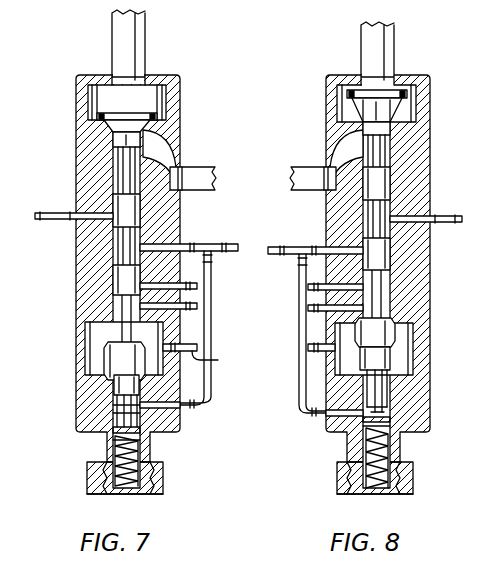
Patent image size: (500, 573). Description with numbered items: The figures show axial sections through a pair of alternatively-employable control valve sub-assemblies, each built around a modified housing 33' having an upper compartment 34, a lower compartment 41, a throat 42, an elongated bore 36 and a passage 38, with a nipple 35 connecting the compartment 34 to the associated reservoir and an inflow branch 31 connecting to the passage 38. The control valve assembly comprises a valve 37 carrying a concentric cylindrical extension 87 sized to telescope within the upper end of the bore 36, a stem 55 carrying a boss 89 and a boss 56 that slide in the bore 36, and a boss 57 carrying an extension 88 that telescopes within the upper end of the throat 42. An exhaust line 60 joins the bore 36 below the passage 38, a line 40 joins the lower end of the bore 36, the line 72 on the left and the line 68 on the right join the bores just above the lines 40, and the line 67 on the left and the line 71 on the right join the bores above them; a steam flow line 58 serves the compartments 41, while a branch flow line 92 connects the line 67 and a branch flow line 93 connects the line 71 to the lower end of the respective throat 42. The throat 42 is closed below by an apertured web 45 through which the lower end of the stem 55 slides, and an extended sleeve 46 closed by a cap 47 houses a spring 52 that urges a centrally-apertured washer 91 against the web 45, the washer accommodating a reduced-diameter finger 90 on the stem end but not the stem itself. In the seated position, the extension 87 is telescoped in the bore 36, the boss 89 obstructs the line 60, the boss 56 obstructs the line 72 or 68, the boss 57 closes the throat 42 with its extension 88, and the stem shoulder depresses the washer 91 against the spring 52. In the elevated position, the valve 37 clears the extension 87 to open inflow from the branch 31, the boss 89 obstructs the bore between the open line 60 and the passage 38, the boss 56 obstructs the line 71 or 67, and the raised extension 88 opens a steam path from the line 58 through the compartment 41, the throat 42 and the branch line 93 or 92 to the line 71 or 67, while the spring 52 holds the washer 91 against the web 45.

In FIG. 7, the inflow branch 31 is at (198, 175).
In FIG. 8, the inflow branch 31 is at (306, 172).
In FIG. 8, the housing 33' is at (396, 268).
In FIG. 7, the compartment 34 is at (97, 96).
In FIG. 8, the compartment 34 is at (416, 110).
In FIG. 7, the nipple 35 is at (139, 45).
In FIG. 8, the nipple 35 is at (386, 47).
In FIG. 7, the bore 36 is at (138, 233).
In FIG. 8, the bore 36 is at (388, 212).
In FIG. 7, the valve 37 is at (133, 121).
In FIG. 8, the valve 37 is at (368, 95).
In FIG. 7, the passage 38 is at (162, 162).
In FIG. 8, the passage 38 is at (346, 160).
In FIG. 7, the line 40 is at (198, 309).
In FIG. 8, the line 40 is at (312, 308).
In FIG. 7, the compartment 41 is at (95, 340).
In FIG. 8, the compartment 41 is at (408, 340).
In FIG. 7, the throat 42 is at (117, 405).
In FIG. 8, the throat 42 is at (388, 393).
In FIG. 7, the apertured web 45 is at (120, 413).
In FIG. 8, the apertured web 45 is at (395, 418).
In FIG. 7, the sleeve 46 is at (100, 470).
In FIG. 8, the sleeve 46 is at (348, 452).
In FIG. 7, the cap 47 is at (88, 491).
In FIG. 8, the cap 47 is at (338, 484).
In FIG. 7, the spring 52 is at (128, 472).
In FIG. 8, the spring 52 is at (402, 455).
In FIG. 7, the stem 55 is at (118, 251).
In FIG. 8, the stem 55 is at (382, 145).
In FIG. 7, the boss 56 is at (118, 279).
In FIG. 8, the boss 56 is at (388, 257).
In FIG. 7, the boss 57 is at (117, 362).
In FIG. 8, the boss 57 is at (370, 333).
In FIG. 7, the steam flow line 58 is at (214, 356).
In FIG. 8, the steam flow line 58 is at (302, 358).
In FIG. 7, the exhaust line 60 is at (40, 214).
In FIG. 8, the exhaust line 60 is at (458, 217).
In FIG. 7, the line 67 is at (237, 246).
In FIG. 8, the line 68 is at (312, 287).
In FIG. 8, the line 71 is at (283, 246).
In FIG. 7, the line 72 is at (198, 282).
In FIG. 7, the extension 87 is at (142, 138).
In FIG. 8, the extension 87 is at (370, 114).
In FIG. 7, the extension 88 is at (125, 385).
In FIG. 8, the extension 88 is at (390, 357).
In FIG. 7, the boss 89 is at (121, 203).
In FIG. 8, the boss 89 is at (385, 181).
In FIG. 7, the finger 90 is at (115, 445).
In FIG. 8, the finger 90 is at (392, 410).
In FIG. 7, the washer 91 is at (113, 430).
In FIG. 8, the washer 91 is at (362, 420).
In FIG. 7, the branch flow line 92 is at (212, 331).
In FIG. 8, the branch flow line 93 is at (306, 344).